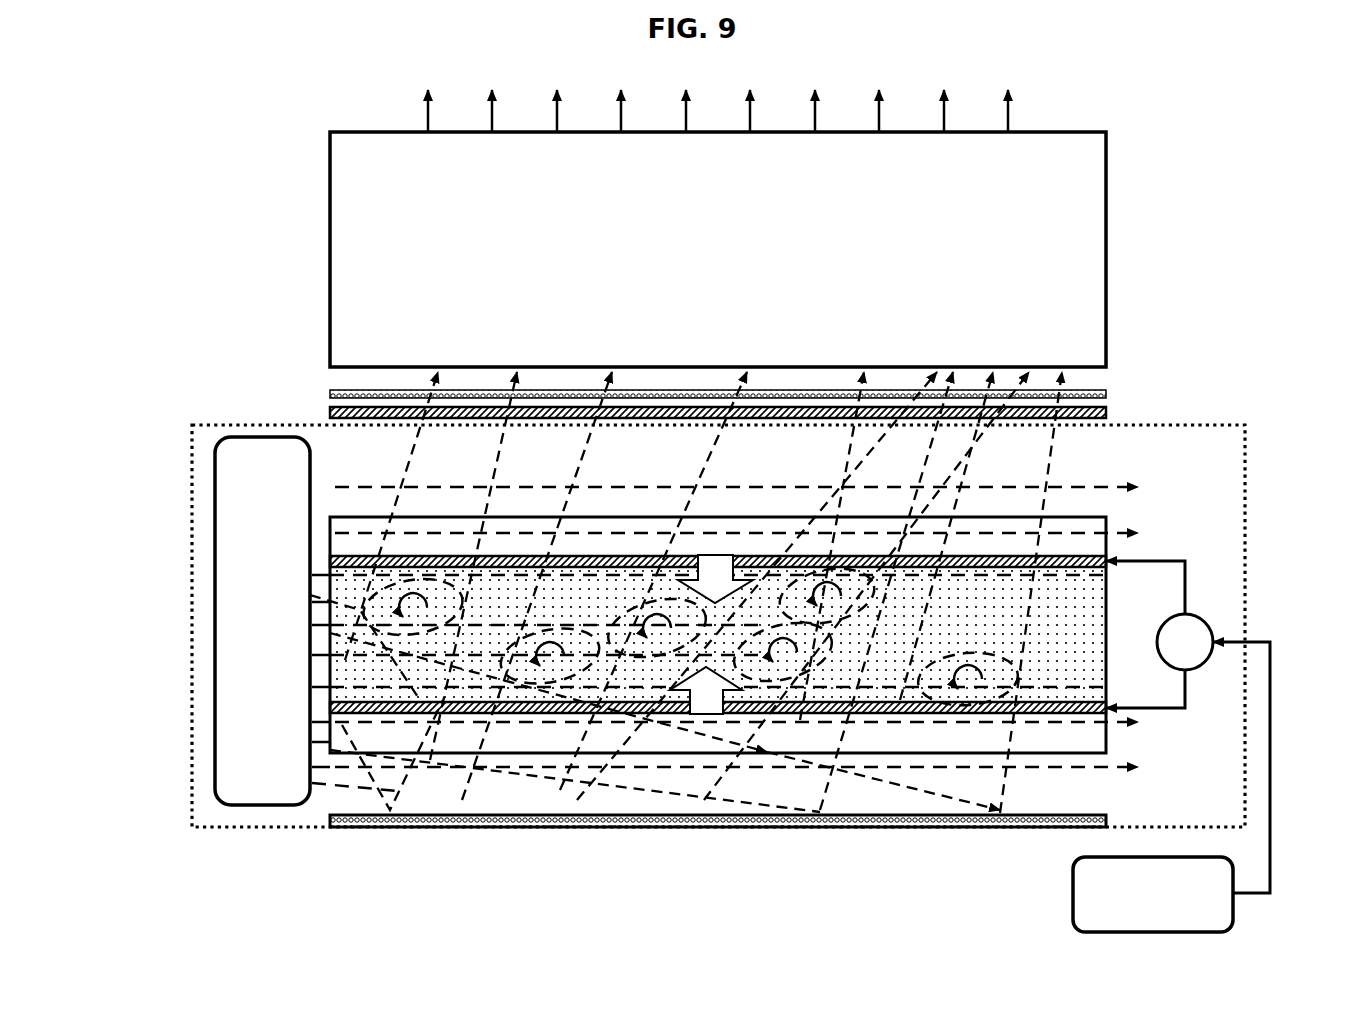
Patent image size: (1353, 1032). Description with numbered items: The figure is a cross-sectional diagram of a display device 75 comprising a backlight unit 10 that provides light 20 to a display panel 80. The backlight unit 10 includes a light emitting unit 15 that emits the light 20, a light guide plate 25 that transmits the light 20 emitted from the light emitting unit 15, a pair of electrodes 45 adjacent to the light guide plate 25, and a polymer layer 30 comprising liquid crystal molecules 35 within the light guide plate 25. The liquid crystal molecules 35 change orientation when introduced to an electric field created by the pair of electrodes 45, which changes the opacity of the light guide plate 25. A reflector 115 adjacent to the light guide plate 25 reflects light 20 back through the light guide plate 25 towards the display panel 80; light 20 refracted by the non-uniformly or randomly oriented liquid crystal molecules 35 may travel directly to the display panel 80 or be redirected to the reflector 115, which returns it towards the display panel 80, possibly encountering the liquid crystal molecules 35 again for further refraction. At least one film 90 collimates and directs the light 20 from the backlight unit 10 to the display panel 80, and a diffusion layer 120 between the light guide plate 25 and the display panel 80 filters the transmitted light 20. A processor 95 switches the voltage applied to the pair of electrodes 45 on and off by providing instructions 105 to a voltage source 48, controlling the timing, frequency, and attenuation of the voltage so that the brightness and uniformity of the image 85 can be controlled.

The backlight unit 10 is at (192, 585).
The light emitting unit 15 is at (248, 635).
The light 20 is at (410, 455).
The light guide plate 25 is at (440, 755).
The polymer layer 30 is at (568, 714).
The liquid crystal molecules 35 is at (529, 630).
The pair of electrodes 45 is at (660, 555).
The voltage source 48 is at (1201, 616).
The display device 75 is at (102, 283).
The display panel 80 is at (330, 245).
The image 85 is at (421, 114).
The film 90 is at (330, 391).
The processor 95 is at (1167, 922).
The instructions 105 is at (1270, 757).
The reflector 115 is at (869, 829).
The diffusion layer 120 is at (1107, 413).